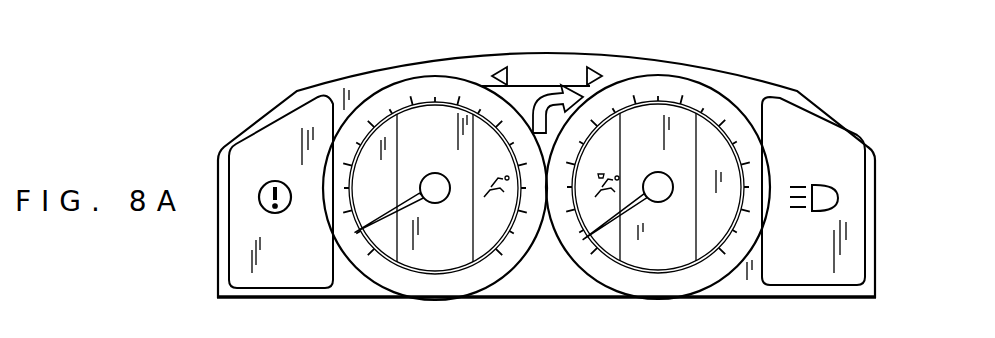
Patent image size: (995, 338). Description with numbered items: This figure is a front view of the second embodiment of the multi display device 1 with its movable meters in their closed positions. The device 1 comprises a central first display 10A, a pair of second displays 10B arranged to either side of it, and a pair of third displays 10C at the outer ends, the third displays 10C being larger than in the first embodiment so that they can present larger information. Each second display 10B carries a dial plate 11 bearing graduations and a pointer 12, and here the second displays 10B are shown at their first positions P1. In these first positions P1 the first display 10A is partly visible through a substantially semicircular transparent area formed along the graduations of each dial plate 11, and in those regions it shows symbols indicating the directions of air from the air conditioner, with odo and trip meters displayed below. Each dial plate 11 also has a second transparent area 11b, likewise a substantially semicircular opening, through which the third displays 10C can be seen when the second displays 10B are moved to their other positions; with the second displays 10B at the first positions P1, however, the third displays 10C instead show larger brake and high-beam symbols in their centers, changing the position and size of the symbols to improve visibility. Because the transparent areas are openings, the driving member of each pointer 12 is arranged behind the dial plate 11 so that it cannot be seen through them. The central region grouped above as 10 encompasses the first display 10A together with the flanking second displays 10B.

The multi display device 1 is at (797, 82).
The central display section 10 is at (474, 33).
The first display 10A is at (547, 84).
The second display 10B is at (470, 80).
The third display 10C is at (273, 137).
The dial plate 11 is at (546, 183).
The second transparent area 11b is at (392, 245).
The pointer 12 is at (367, 238).
The first position P1 is at (370, 95).